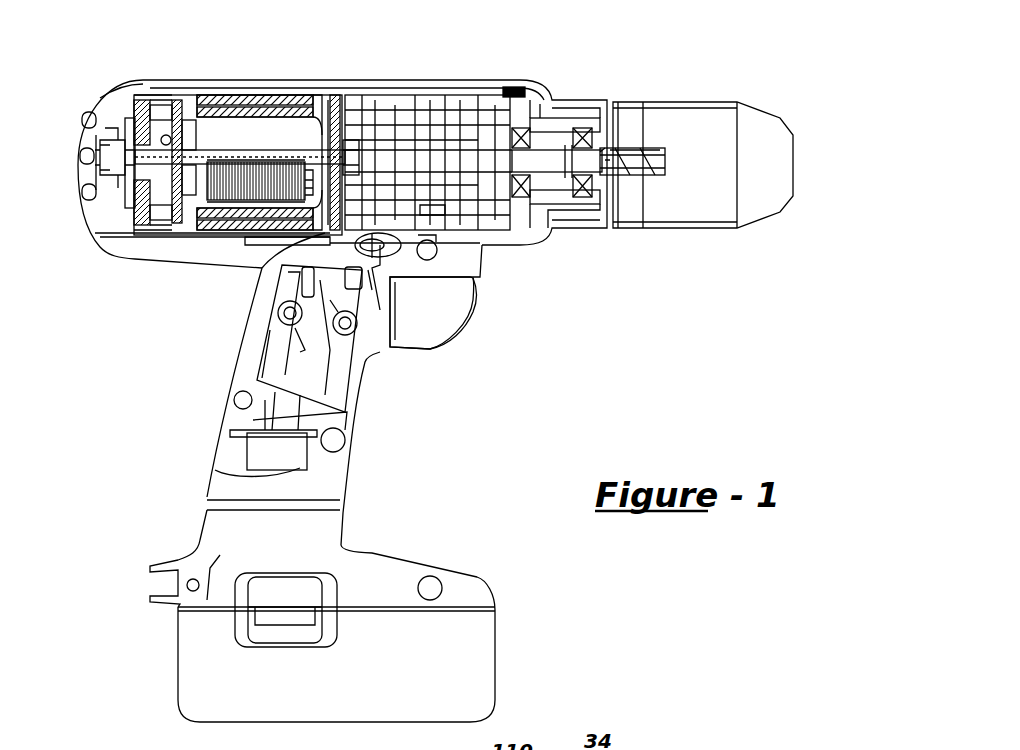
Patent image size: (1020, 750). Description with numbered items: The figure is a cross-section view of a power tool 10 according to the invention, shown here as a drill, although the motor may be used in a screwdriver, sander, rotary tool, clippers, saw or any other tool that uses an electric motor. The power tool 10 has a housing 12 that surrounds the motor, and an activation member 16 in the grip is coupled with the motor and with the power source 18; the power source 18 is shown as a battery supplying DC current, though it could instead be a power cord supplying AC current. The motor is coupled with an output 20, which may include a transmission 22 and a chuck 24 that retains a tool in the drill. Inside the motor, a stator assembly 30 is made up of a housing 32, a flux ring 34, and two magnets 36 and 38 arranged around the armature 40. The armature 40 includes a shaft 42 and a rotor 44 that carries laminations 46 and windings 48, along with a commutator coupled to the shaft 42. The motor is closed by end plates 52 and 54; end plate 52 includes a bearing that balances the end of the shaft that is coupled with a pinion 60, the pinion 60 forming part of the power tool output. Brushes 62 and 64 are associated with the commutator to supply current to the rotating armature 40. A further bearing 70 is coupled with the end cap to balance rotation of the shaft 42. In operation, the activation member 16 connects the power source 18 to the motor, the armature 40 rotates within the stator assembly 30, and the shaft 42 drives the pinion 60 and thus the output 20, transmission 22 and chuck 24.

The power tool 10 is at (622, 292).
The housing 12 is at (350, 420).
The activation member 16 is at (410, 317).
The power source 18 is at (482, 645).
The output 20 is at (385, 160).
The transmission 22 is at (430, 107).
The chuck 24 is at (705, 112).
The stator assembly 30 is at (180, 127).
The housing 32 is at (185, 120).
The flux ring 34 is at (221, 97).
The magnet 36 is at (262, 97).
The magnet 38 is at (223, 237).
The armature 40 is at (312, 117).
The shaft 42 is at (160, 237).
The rotor 44 is at (178, 237).
The laminations 46 is at (245, 238).
The windings 48 is at (265, 263).
The end plate 52 is at (343, 97).
The end plate 54 is at (117, 135).
The pinion 60 is at (432, 210).
The brush 62 is at (132, 242).
The brush 64 is at (142, 118).
The bearing 70 is at (351, 157).